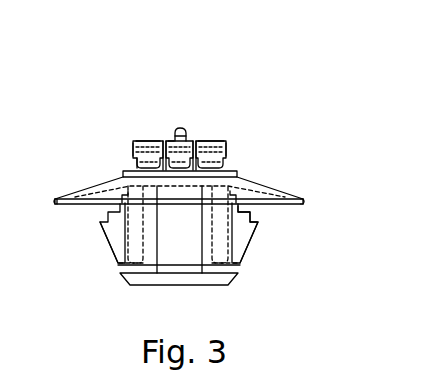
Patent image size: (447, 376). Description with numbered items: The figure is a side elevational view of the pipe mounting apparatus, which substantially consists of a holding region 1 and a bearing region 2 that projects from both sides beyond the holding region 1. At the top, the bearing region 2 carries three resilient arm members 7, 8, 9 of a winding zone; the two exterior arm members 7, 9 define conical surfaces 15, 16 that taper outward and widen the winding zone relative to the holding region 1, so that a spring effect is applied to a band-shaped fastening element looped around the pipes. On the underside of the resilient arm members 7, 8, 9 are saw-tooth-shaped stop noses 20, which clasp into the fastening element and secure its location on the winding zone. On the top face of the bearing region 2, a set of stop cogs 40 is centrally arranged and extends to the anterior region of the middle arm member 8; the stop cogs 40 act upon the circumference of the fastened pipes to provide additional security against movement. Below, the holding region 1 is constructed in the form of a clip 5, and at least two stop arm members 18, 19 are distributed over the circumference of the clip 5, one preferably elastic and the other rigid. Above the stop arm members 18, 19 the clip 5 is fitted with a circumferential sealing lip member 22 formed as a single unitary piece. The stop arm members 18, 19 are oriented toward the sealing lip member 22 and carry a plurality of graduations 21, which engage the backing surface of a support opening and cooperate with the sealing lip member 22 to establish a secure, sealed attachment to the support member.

The holding region 1 is at (103, 268).
The bearing region 2 is at (218, 128).
The clip 5 is at (237, 282).
The resilient arm member 7 is at (140, 141).
The resilient arm member 8 is at (170, 141).
The resilient arm member 9 is at (226, 145).
The conical surface 15 is at (133, 145).
The conical surface 16 is at (227, 155).
The stop arm member 18 is at (110, 234).
The stop arm member 19 is at (238, 246).
The stop nose 20 is at (136, 160).
The graduation 21 is at (257, 212).
The circumferential sealing lip member 22 is at (56, 203).
The stop cog 40 is at (180, 128).